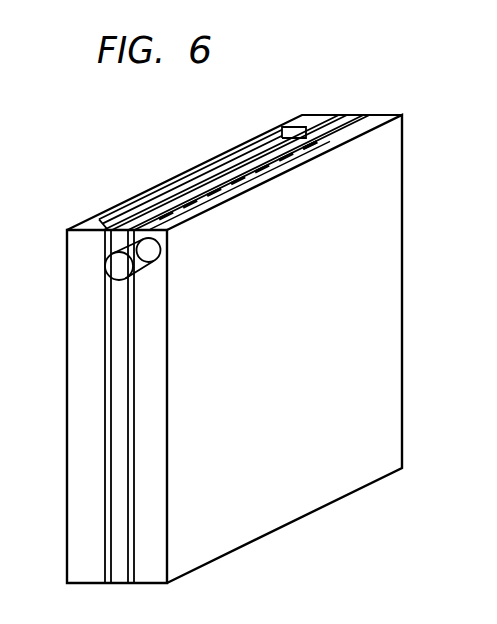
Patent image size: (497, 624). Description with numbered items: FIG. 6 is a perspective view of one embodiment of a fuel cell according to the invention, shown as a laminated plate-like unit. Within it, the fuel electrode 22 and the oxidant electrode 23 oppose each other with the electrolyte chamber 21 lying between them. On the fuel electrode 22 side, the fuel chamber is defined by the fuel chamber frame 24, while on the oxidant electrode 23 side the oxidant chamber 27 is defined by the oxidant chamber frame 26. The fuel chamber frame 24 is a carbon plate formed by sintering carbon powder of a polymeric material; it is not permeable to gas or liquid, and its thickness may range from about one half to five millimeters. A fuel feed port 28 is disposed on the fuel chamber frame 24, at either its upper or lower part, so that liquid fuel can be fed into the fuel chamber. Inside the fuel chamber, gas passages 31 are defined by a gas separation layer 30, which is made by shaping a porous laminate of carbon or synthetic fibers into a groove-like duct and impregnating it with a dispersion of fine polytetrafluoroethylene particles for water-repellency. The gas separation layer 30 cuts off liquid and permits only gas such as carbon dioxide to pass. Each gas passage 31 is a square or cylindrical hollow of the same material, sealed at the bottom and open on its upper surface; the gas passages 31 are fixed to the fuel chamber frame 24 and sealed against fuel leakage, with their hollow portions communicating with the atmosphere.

The electrolyte chamber 21 is at (347, 117).
The fuel electrode 22 is at (377, 120).
The oxidant electrode 23 is at (338, 115).
The fuel chamber frame 24 is at (406, 117).
The oxidant chamber frame 26 is at (300, 122).
The oxidant chamber 27 is at (209, 172).
The fuel feed port 28 is at (138, 259).
The gas separation layer 30 is at (293, 162).
The gas passage 31 is at (313, 140).